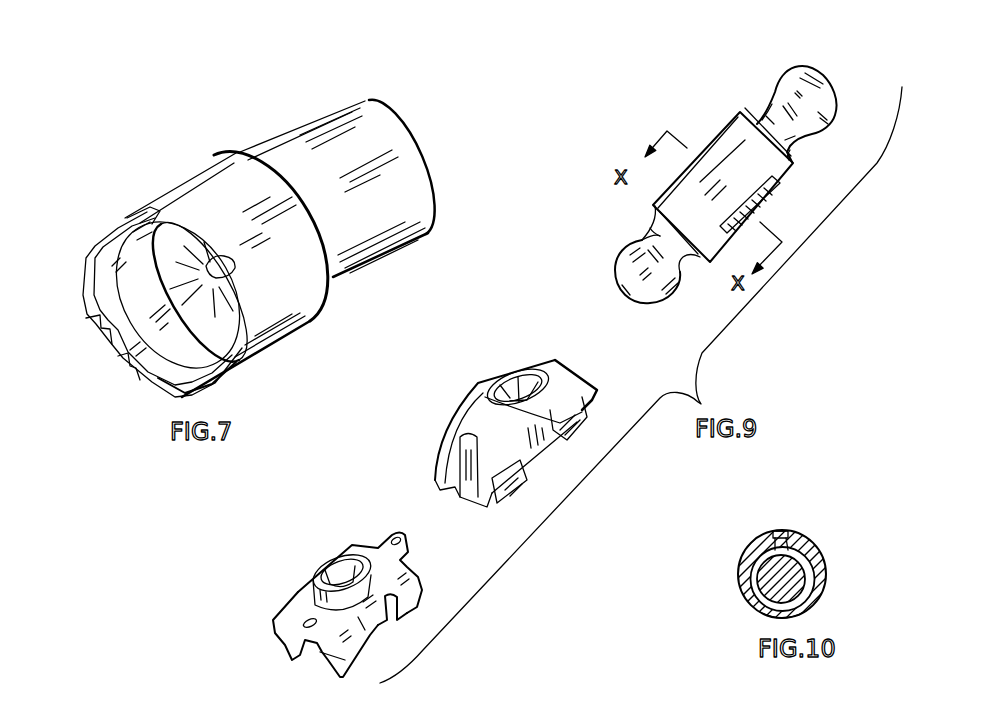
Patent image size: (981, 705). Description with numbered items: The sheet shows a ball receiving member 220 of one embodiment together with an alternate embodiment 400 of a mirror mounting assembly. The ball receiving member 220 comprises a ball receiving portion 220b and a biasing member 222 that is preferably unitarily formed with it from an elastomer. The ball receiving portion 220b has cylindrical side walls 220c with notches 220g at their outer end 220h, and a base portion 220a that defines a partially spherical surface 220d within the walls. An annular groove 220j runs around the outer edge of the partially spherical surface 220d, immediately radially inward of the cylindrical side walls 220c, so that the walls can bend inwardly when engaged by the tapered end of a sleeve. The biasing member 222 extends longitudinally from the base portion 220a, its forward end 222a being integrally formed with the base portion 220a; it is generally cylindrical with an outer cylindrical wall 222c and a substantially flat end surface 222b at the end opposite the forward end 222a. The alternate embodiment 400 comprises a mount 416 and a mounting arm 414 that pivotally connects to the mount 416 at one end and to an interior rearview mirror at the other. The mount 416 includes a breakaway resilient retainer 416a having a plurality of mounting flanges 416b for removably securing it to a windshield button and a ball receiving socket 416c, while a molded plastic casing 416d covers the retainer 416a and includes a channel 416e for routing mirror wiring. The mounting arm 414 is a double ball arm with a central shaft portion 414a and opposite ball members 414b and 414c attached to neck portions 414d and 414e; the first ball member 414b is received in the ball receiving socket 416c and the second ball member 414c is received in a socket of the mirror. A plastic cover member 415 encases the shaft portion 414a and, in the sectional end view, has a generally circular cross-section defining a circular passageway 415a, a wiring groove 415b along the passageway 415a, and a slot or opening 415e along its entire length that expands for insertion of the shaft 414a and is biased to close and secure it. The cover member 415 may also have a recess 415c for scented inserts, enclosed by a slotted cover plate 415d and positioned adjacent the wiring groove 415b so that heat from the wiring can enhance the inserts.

In FIG. 7, the ball receiving member 220 is at (218, 104).
In FIG. 7, the base portion 220a is at (252, 160).
In FIG. 7, the ball receiving portion 220b is at (185, 208).
In FIG. 7, the cylindrical side walls 220c is at (253, 360).
In FIG. 7, the partially spherical surface 220d is at (175, 280).
In FIG. 7, the notches 220g is at (112, 328).
In FIG. 7, the outer end 220h is at (130, 368).
In FIG. 7, the annular groove 220j is at (190, 330).
In FIG. 7, the biasing member 222 is at (366, 248).
In FIG. 7, the forward end 222a is at (270, 157).
In FIG. 7, the planar end surface 222b is at (423, 145).
In FIG. 7, the outer cylindrical wall 222c is at (333, 112).
In FIG. 9, the alternate embodiment 400 is at (577, 157).
In FIG. 10, the alternate embodiment 400 is at (745, 485).
In FIG. 9, the mounting arm 414 is at (696, 93).
In FIG. 10, the central shaft portion 414a is at (790, 573).
In FIG. 9, the first ball member 414b is at (622, 258).
In FIG. 9, the second ball member 414c is at (800, 85).
In FIG. 9, the neck portion 414d is at (658, 232).
In FIG. 9, the neck portion 414e is at (768, 112).
In FIG. 9, the cover member 415 is at (715, 150).
In FIG. 10, the cover member 415 is at (757, 548).
In FIG. 10, the circular passageway 415a is at (750, 598).
In FIG. 10, the wiring channel 415b is at (787, 556).
In FIG. 10, the recess 415c is at (784, 540).
In FIG. 9, the slot in sleeve 415d is at (762, 214).
In FIG. 10, the slot in sleeve 415d is at (781, 531).
In FIG. 10, the slot 415e is at (785, 619).
In FIG. 7, the mount 416 is at (361, 489).
In FIG. 7, the breakaway resilient retainer 416a is at (305, 612).
In FIG. 7, the mounting flanges 416b is at (403, 607).
In FIG. 7, the ball receiving socket 416c is at (335, 578).
In FIG. 7, the casing 416d is at (472, 412).
In FIG. 7, the wiring channel 416e is at (457, 457).